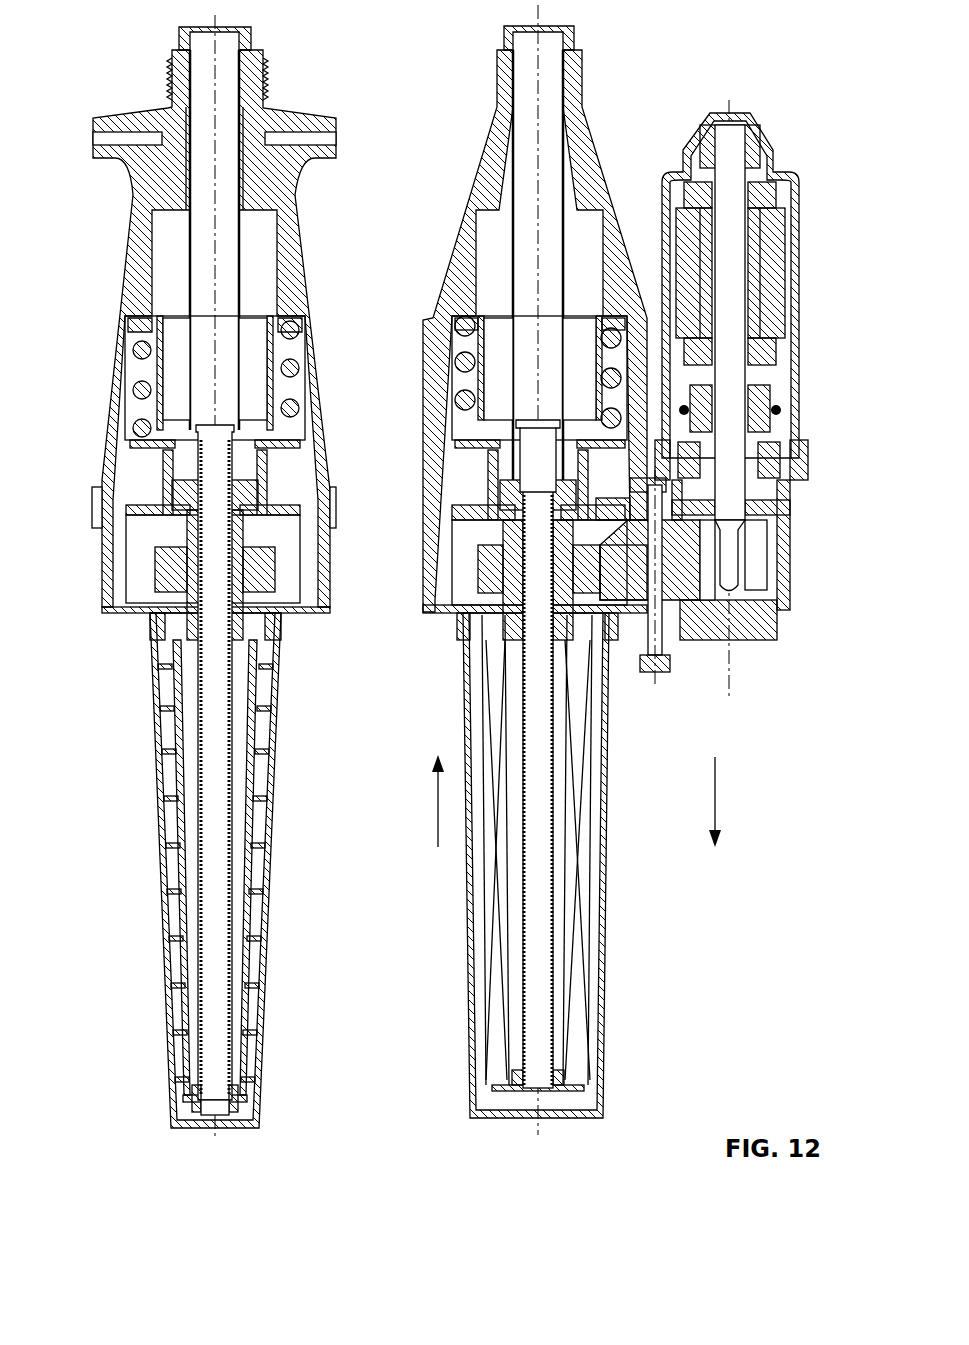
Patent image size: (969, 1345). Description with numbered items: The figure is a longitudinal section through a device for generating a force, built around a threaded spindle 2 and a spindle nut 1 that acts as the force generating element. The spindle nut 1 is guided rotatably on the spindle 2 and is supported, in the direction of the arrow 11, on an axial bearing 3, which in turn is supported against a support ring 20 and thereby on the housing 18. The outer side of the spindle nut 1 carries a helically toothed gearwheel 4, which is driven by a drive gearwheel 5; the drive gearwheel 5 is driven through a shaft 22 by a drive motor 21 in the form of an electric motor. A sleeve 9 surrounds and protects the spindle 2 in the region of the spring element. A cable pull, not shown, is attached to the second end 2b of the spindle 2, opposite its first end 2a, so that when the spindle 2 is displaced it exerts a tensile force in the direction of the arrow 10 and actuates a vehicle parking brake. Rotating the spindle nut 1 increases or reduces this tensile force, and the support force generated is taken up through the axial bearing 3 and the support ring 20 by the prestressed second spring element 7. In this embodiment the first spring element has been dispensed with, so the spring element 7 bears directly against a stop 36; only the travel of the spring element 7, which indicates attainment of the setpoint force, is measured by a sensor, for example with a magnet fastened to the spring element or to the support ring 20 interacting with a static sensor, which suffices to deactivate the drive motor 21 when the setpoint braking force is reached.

The spindle nut 1 is at (188, 600).
The spindle 2 is at (236, 822).
The first end 2a is at (544, 1094).
The second end 2b is at (537, 492).
The axial bearing 3 is at (173, 532).
The helically toothed gearwheel 4 is at (156, 577).
The drive gearwheel 5 is at (707, 570).
The second spring element 7 is at (130, 372).
The sleeve 9 is at (240, 172).
The arrow 10 is at (715, 800).
The arrow 11 is at (438, 800).
The housing 18 is at (606, 866).
The support ring 20 is at (576, 508).
The drive motor 21 is at (777, 250).
The shaft 22 is at (733, 505).
The stop 36 is at (133, 322).